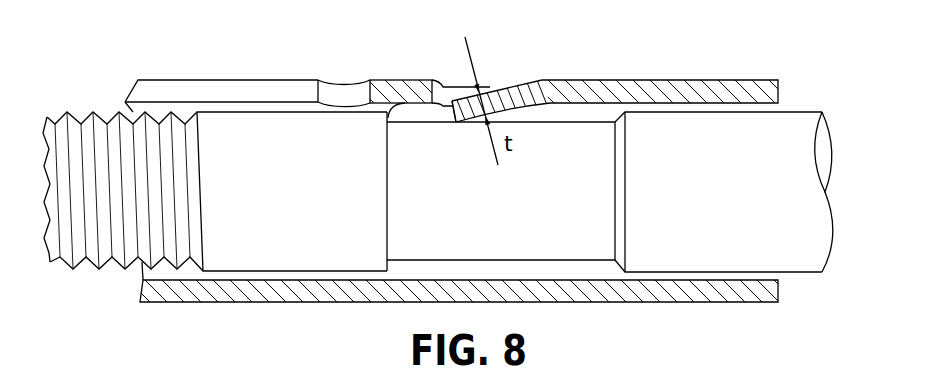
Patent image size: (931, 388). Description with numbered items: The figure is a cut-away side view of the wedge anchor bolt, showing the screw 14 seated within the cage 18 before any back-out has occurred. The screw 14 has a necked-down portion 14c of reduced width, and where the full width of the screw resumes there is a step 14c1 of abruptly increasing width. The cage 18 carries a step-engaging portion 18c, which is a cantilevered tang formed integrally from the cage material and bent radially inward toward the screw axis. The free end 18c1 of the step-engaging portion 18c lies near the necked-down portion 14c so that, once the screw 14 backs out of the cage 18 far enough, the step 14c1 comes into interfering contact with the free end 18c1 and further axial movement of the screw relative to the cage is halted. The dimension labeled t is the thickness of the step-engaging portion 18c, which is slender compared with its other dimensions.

The screw 14 is at (800, 108).
The necked-down portion 14c is at (596, 188).
The step 14c1 is at (399, 80).
The cage 18 is at (646, 78).
The step-engaging portion 18c is at (498, 84).
The free end 18c1 is at (449, 122).